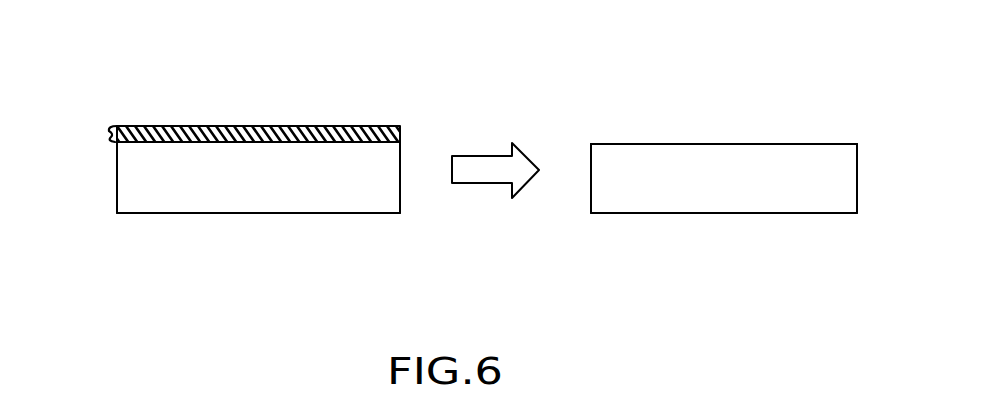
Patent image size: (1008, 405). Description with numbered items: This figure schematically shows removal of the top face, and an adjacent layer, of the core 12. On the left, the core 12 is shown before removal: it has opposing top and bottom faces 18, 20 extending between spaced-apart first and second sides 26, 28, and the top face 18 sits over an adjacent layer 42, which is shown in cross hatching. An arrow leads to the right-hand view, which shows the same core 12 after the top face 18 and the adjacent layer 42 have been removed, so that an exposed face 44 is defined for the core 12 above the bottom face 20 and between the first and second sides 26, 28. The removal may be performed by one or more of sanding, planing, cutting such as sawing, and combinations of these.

The core 12 is at (470, 156).
The top face 18 is at (324, 126).
The bottom face 20 is at (315, 213).
The first side 26 is at (117, 172).
The second side 28 is at (400, 183).
The adjacent layer 42 is at (108, 136).
The exposed face 44 is at (745, 144).